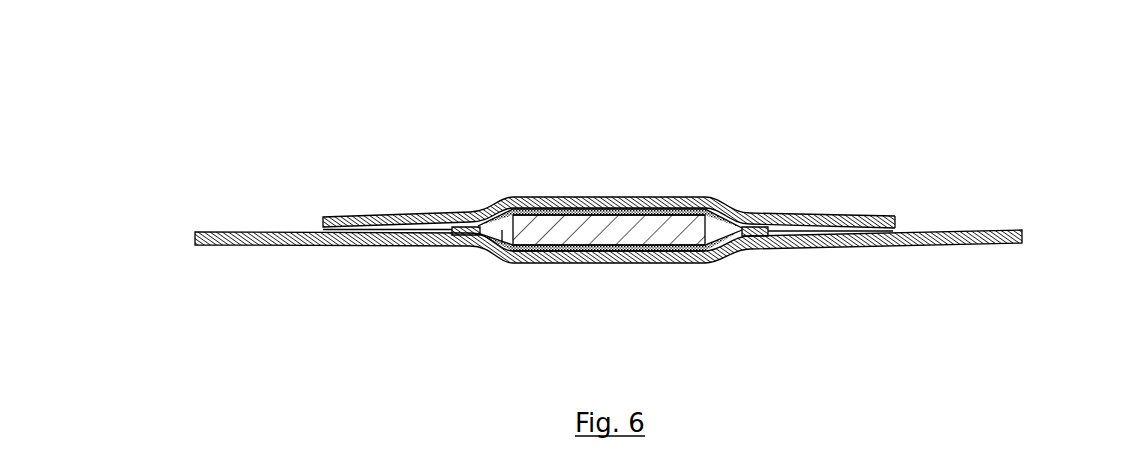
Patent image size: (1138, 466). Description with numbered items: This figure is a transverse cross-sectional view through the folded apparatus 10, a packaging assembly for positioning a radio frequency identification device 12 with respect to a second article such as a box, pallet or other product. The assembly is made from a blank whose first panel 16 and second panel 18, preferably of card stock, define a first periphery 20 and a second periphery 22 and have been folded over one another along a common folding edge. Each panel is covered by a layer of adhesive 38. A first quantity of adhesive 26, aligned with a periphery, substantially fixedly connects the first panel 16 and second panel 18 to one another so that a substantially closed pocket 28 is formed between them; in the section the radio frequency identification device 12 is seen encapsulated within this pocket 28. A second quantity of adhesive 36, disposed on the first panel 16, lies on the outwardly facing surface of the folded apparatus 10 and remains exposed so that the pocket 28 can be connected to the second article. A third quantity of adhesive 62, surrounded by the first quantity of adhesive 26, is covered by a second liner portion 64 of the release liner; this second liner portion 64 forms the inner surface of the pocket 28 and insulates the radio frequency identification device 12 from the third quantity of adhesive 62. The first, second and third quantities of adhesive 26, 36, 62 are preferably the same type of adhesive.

The apparatus 10 is at (795, 112).
The radio frequency identification device 12 is at (520, 197).
The first panel 16 is at (212, 245).
The second panel 18 is at (862, 217).
The first periphery 20 is at (1022, 236).
The second periphery 22 is at (897, 220).
The first quantity of adhesive 26 is at (332, 245).
The pocket 28 is at (500, 264).
The second quantity of adhesive 36 is at (250, 231).
The layer of adhesive 38 is at (642, 264).
The third quantity of adhesive 62 is at (560, 264).
The second liner portion 64 is at (652, 198).